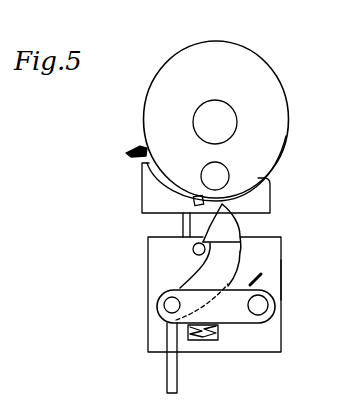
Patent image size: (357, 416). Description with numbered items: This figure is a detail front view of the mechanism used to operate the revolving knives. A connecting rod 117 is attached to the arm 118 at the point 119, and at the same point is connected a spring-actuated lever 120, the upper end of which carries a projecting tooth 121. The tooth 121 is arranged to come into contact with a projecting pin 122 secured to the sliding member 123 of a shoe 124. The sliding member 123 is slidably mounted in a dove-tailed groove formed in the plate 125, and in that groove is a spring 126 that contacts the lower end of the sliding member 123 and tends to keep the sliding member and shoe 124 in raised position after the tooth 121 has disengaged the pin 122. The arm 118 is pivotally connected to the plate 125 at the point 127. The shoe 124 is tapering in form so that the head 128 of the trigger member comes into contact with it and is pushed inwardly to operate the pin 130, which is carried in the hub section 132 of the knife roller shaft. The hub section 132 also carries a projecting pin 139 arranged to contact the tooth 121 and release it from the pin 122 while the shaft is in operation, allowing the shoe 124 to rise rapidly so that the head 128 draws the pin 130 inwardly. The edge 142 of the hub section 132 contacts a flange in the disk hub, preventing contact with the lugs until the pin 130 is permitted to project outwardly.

The connecting rod 117 is at (167, 388).
The arm 118 is at (204, 303).
The point of attachment 119 is at (167, 306).
The spring-actuated lever 120 is at (225, 260).
The projecting tooth 121 is at (225, 228).
The projecting pin 122 is at (193, 247).
The sliding member 123 is at (183, 225).
The shoe 124 is at (142, 199).
The plate 125 is at (282, 275).
The spring 126 is at (220, 335).
The pivot point 127 is at (258, 305).
The head of trigger member 128 is at (194, 201).
The pin 130 is at (213, 177).
The hub section 132 is at (287, 127).
The projecting pin 139 is at (126, 152).
The edge of hub section 142 is at (276, 95).